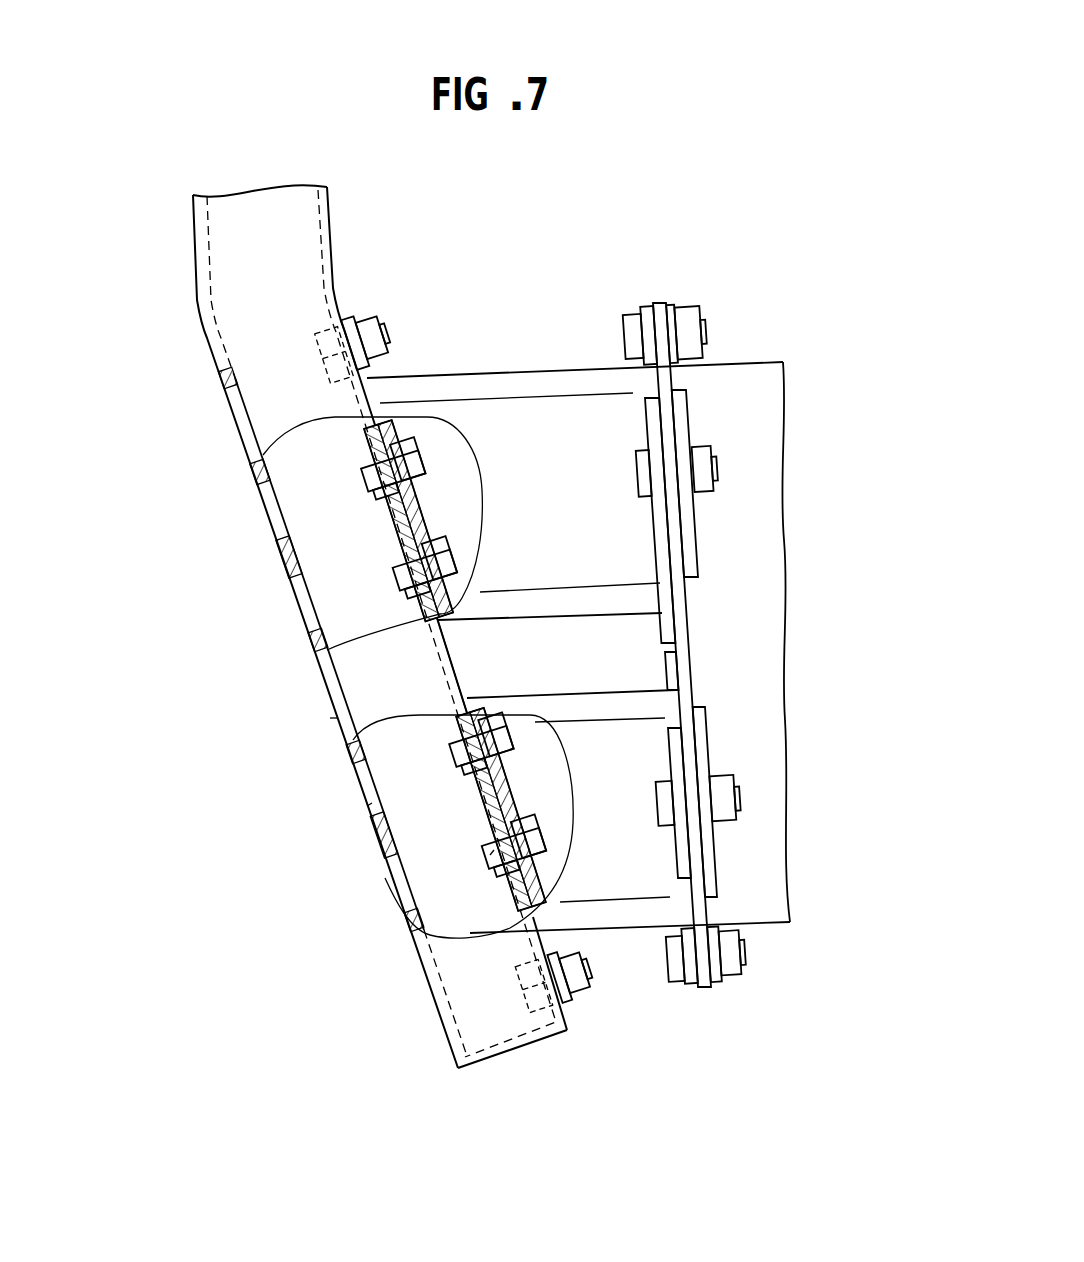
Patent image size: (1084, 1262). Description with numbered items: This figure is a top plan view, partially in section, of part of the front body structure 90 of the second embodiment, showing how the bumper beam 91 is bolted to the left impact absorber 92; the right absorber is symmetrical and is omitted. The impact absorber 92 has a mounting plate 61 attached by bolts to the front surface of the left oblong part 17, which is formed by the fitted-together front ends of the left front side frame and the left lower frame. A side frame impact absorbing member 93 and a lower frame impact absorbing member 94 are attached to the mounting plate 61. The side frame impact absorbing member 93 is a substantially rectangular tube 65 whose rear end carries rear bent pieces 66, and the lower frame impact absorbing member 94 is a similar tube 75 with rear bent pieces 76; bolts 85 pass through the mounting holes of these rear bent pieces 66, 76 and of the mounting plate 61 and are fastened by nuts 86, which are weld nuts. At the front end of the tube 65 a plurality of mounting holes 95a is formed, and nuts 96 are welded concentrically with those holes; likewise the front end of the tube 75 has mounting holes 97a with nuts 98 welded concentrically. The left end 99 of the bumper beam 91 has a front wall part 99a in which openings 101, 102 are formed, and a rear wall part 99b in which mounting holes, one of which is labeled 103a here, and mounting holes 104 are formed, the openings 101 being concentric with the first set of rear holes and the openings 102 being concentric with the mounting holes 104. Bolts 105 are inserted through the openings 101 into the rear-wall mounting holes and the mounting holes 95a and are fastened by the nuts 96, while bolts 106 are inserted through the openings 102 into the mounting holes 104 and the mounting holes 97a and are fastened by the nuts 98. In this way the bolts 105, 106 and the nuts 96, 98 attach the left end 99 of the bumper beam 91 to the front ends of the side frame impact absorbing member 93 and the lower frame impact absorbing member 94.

The front body structure 90 is at (762, 93).
The bumper beam 91 is at (193, 233).
The left impact absorber 92 is at (628, 215).
The side frame impact absorbing member 93 is at (533, 372).
The left oblong part 17 is at (768, 412).
The mounting plate 61 is at (663, 387).
The tube 65 is at (470, 378).
The rear bent pieces 66 is at (662, 552).
The tube 75 is at (588, 692).
The rear bent pieces 76 is at (682, 867).
The bolts 85 is at (628, 318).
The nuts 86 is at (690, 312).
The lower frame impact absorbing member 94 is at (620, 688).
The mounting holes 95a is at (412, 446).
The nuts 96 is at (365, 328).
The mounting holes 97a is at (540, 835).
The nuts 98 is at (540, 840).
The left end 99 is at (327, 674).
The front wall part 99a is at (337, 718).
The rear wall part 99b is at (450, 660).
The openings 101 is at (221, 384).
The openings 102 is at (393, 873).
The weld portion 103a is at (256, 472).
The mounting holes 104 is at (490, 855).
The bolts 105 is at (320, 355).
The bolts 106 is at (530, 997).